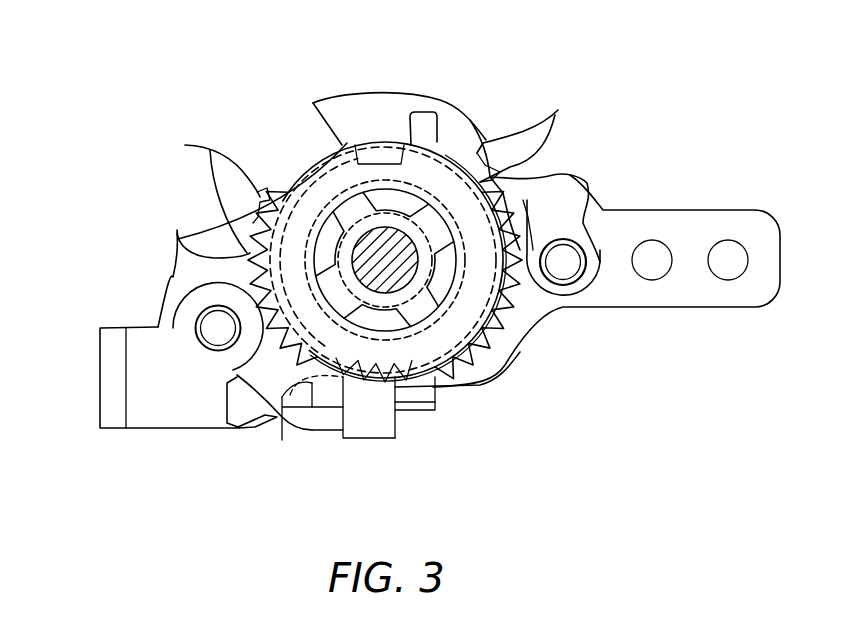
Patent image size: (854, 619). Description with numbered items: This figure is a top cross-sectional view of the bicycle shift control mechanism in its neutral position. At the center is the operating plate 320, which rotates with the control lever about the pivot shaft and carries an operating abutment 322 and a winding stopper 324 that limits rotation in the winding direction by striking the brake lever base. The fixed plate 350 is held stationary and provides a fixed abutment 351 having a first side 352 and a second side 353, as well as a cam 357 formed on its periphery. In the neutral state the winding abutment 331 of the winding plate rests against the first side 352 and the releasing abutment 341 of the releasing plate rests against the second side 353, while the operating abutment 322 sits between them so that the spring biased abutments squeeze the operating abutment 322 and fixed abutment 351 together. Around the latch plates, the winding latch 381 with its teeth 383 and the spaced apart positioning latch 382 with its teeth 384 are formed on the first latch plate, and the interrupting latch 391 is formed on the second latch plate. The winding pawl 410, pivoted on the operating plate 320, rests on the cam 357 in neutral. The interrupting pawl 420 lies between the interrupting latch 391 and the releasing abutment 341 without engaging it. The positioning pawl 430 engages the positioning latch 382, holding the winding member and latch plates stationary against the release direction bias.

The operating plate 320 is at (473, 133).
The operating abutment 322 is at (400, 420).
The winding stopper 324 is at (318, 121).
The winding abutment 331 is at (433, 410).
The releasing abutment 341 is at (305, 430).
The fixed plate 350 is at (148, 414).
The fixed abutment 351 is at (385, 440).
The first side 352 is at (397, 418).
The second side 353 is at (350, 440).
The cam 357 is at (587, 183).
The winding latch 381 is at (460, 148).
The positioning latch 382 is at (273, 182).
The teeth 383 is at (558, 110).
The teeth 384 is at (185, 145).
The interrupting latch 391 is at (177, 233).
The winding pawl 410 is at (603, 210).
The interrupting pawl 420 is at (282, 420).
The positioning pawl 430 is at (253, 425).